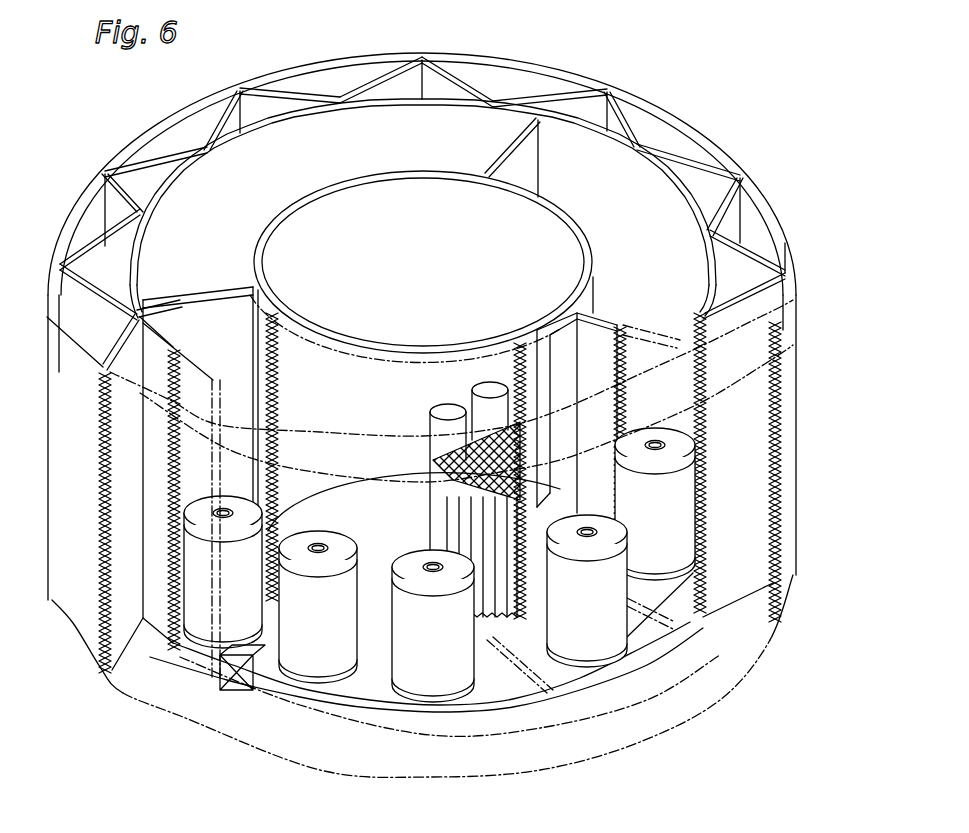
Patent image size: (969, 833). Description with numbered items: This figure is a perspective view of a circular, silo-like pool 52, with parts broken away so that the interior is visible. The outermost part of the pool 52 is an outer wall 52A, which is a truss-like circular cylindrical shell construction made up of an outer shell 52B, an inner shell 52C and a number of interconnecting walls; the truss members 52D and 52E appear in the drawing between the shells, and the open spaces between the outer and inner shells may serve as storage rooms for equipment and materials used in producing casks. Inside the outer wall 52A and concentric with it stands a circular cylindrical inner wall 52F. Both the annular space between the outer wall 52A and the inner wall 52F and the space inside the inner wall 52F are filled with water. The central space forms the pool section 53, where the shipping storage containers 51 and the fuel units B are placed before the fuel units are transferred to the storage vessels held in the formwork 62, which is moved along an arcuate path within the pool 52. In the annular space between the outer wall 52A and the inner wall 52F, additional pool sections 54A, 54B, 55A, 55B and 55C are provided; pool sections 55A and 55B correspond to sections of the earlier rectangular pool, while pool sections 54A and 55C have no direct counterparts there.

The pool 52 is at (450, 165).
The outer wall 52A is at (682, 105).
The outer shell 52B is at (708, 133).
The inner shell 52C is at (742, 173).
The vertical post 52D is at (753, 248).
The diagonal brace 52E is at (435, 88).
The inner wall 52F is at (580, 248).
The pool section 53 is at (365, 235).
The pool section 54A is at (352, 373).
The pool section 54B is at (572, 345).
The pool section 55A is at (648, 230).
The pool section 55B is at (280, 189).
The pool section 55C is at (237, 340).
The shipping storage container 51 is at (447, 412).
The fuel unit B is at (455, 505).
The formwork 62 is at (237, 620).